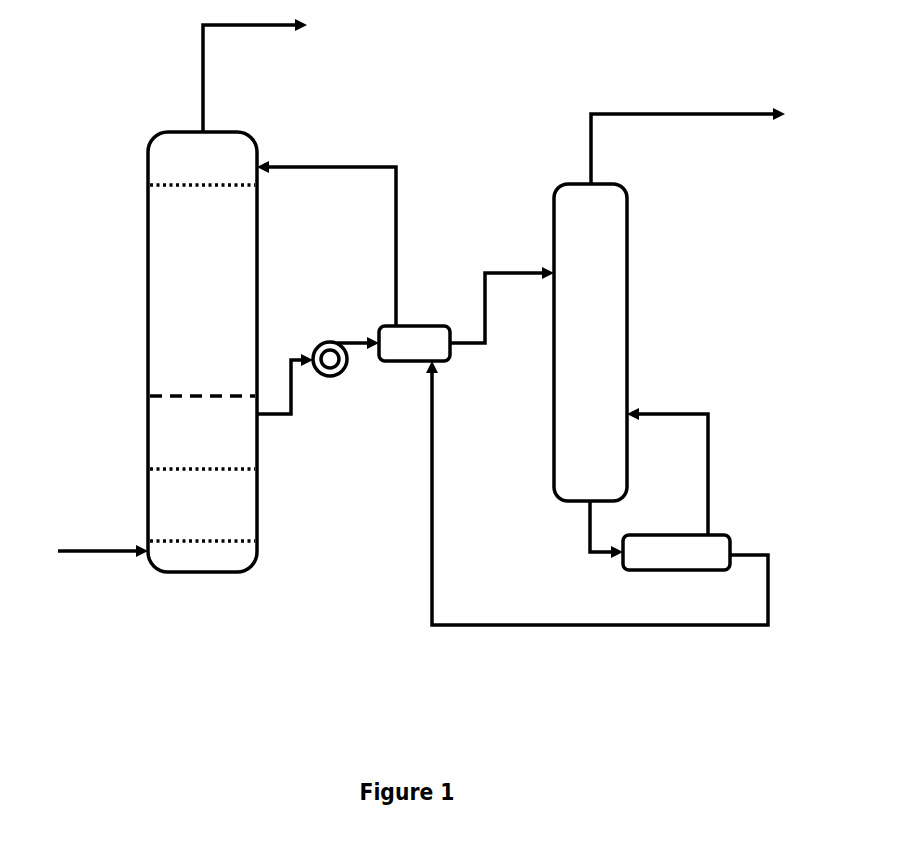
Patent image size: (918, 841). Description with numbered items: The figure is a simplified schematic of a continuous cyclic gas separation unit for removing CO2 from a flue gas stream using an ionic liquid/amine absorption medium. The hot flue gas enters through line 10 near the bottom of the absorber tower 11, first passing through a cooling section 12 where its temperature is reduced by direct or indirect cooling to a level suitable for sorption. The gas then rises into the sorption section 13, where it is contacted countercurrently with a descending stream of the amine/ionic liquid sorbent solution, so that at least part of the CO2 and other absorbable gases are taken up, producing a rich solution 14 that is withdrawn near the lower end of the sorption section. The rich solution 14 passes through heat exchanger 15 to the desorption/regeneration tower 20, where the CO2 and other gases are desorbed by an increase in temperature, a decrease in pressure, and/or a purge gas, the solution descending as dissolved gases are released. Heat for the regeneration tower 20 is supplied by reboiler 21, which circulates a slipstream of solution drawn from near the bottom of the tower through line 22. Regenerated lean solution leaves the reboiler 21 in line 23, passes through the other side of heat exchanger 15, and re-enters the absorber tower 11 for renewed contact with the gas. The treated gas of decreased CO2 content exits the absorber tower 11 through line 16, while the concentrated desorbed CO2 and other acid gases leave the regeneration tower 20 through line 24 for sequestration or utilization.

The line 10 is at (97, 555).
The absorber tower 11 is at (133, 291).
The cooling section 12 is at (202, 505).
The sorption section 13 is at (202, 341).
The rich solution 14 is at (308, 414).
The heat exchanger 15 is at (375, 324).
The line 16 is at (185, 97).
The desorption/regeneration tower 20 is at (590, 342).
The reboiler 21 is at (737, 528).
The line 22 is at (573, 537).
The line 23 is at (549, 635).
The line 24 is at (665, 100).